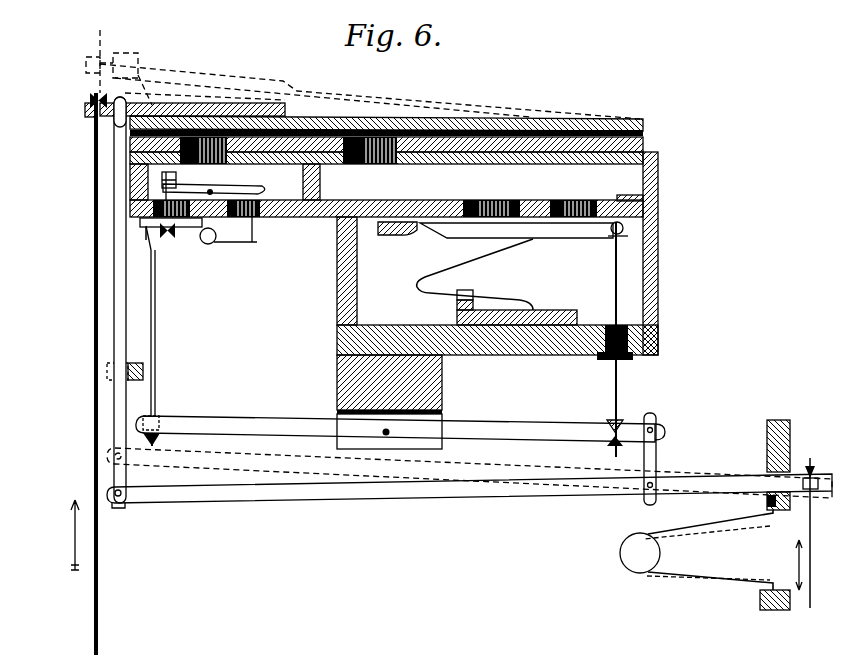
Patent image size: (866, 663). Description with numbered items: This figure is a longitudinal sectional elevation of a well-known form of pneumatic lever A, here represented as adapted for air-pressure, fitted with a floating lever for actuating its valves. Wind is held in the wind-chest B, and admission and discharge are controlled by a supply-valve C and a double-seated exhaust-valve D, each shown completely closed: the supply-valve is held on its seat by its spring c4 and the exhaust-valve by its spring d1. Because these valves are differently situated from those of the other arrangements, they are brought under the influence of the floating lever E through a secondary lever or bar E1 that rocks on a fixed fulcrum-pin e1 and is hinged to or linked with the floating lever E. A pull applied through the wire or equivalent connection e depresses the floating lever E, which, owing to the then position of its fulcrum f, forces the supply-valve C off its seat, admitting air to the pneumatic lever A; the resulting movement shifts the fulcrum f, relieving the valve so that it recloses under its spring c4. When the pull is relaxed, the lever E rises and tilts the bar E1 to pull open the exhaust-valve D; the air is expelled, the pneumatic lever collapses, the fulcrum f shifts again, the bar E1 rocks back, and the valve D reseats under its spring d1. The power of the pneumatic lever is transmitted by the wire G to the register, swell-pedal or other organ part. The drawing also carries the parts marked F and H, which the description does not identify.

The pneumatic lever A is at (287, 108).
The wind-chest B is at (497, 333).
The supply-valve C is at (524, 339).
The spring c4 is at (475, 274).
The exhaust-valve D is at (250, 184).
The spring d1 is at (228, 241).
The floating lever E is at (469, 476).
The secondary lever or bar E1 is at (502, 428).
The wire or equivalent connection e is at (812, 560).
The fixed fulcrum-pin e1 is at (399, 432).
The rod F is at (145, 336).
The fulcrum f is at (125, 506).
The wire G is at (107, 370).
The belt H is at (696, 550).